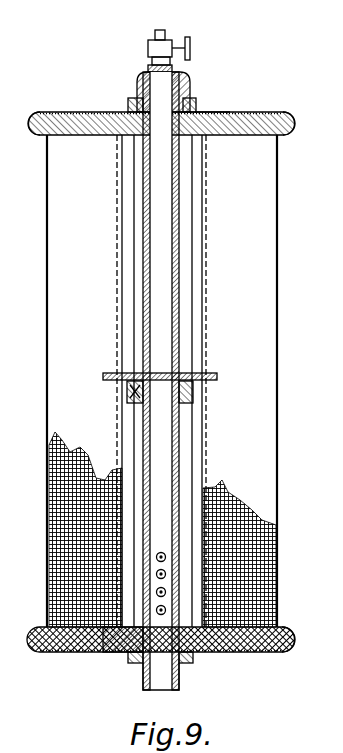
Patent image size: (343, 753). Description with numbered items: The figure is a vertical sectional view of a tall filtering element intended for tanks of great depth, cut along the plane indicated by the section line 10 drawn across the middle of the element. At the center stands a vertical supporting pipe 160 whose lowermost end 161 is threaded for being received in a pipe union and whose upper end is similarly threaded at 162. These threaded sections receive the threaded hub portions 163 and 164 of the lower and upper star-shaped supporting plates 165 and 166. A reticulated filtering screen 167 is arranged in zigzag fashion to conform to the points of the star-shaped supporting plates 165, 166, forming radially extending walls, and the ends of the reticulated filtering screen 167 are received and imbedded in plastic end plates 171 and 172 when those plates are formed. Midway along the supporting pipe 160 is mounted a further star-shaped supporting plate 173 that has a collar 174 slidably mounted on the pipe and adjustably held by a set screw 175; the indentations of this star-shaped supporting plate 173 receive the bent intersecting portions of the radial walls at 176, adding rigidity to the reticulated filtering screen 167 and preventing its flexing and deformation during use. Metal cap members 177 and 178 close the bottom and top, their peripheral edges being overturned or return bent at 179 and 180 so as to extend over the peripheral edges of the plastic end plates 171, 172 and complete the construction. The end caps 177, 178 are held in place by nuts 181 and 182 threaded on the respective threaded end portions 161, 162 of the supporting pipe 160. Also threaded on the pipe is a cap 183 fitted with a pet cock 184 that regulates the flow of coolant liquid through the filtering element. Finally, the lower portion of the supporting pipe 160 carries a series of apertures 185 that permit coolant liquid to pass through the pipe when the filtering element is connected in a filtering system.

The section line 10 is at (9, 362).
The vertical supporting pipe 160 is at (143, 294).
The lowermost end 161 is at (180, 685).
The threaded upper end 162 is at (130, 100).
The threaded hub portion 163 is at (112, 652).
The threaded hub portion 164 is at (207, 111).
The star-shaped supporting plate 165 is at (215, 615).
The star-shaped supporting plate 166 is at (110, 137).
The reticulated filtering screen 167 is at (278, 272).
The plastic end plate 171 is at (288, 652).
The plastic end plate 172 is at (270, 112).
The star-shaped supporting plate 173 is at (212, 372).
The collar 174 is at (192, 396).
The set screw 175 is at (127, 392).
The bent intersecting portions 176 is at (197, 288).
The metal cap member 177 is at (72, 652).
The metal cap member 178 is at (70, 112).
The return-bent peripheral edge 179 is at (296, 640).
The return-bent peripheral edge 180 is at (31, 130).
The nut 181 is at (137, 666).
The nut 182 is at (190, 102).
The cap 183 is at (137, 80).
The pet cock 184 is at (148, 47).
The apertures 185 is at (165, 574).